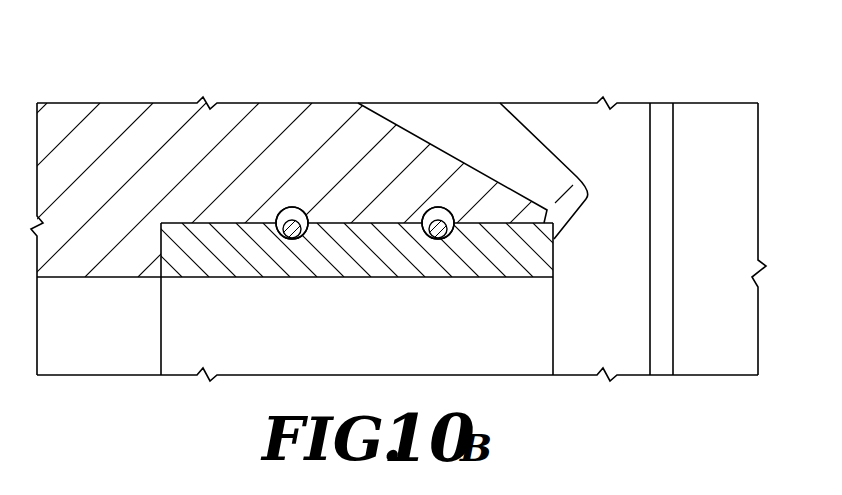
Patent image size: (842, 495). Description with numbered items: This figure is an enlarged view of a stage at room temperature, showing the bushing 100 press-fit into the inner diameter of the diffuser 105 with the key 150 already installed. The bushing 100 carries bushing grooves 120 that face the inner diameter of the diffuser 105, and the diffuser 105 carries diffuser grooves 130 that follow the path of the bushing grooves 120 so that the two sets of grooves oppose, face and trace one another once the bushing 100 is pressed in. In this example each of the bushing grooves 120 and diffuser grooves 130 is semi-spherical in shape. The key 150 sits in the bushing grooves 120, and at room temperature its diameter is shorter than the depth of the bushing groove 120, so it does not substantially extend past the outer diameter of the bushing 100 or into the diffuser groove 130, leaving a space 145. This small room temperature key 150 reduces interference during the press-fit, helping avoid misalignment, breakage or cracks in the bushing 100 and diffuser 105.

The bushing 100 is at (517, 250).
The diffuser 105 is at (142, 148).
The bushing grooves 120 is at (417, 243).
The diffuser grooves 130 is at (293, 207).
The space 145 is at (302, 210).
The key 150 is at (296, 238).